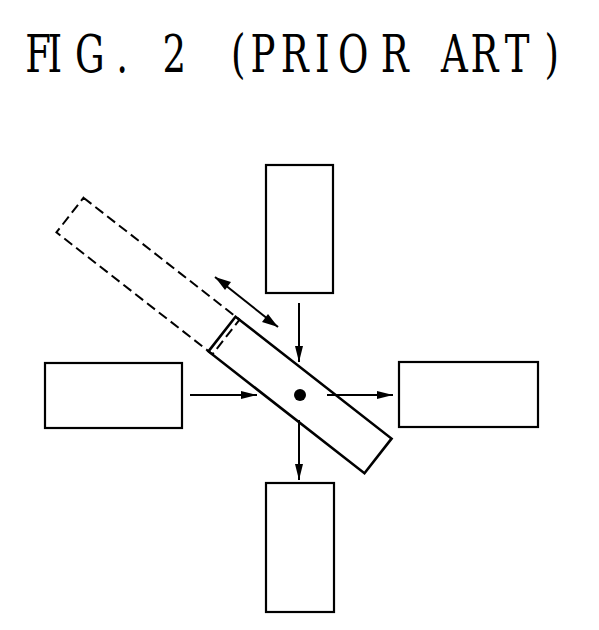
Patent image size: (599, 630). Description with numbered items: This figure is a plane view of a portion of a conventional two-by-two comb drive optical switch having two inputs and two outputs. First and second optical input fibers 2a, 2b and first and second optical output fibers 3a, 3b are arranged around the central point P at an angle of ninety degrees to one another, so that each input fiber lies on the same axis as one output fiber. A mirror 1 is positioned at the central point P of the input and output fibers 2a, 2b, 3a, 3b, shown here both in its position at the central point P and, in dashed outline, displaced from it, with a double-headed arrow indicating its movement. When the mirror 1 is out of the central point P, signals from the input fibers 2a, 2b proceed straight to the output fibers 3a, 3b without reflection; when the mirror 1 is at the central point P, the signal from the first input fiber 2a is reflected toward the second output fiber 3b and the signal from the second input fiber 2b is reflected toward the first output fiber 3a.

The mirror 1 is at (122, 240).
The first optical input fiber 2a is at (110, 362).
The second optical input fiber 2b is at (333, 205).
The first optical output fiber 3a is at (471, 360).
The second optical output fiber 3b is at (335, 548).
The central point P is at (305, 389).